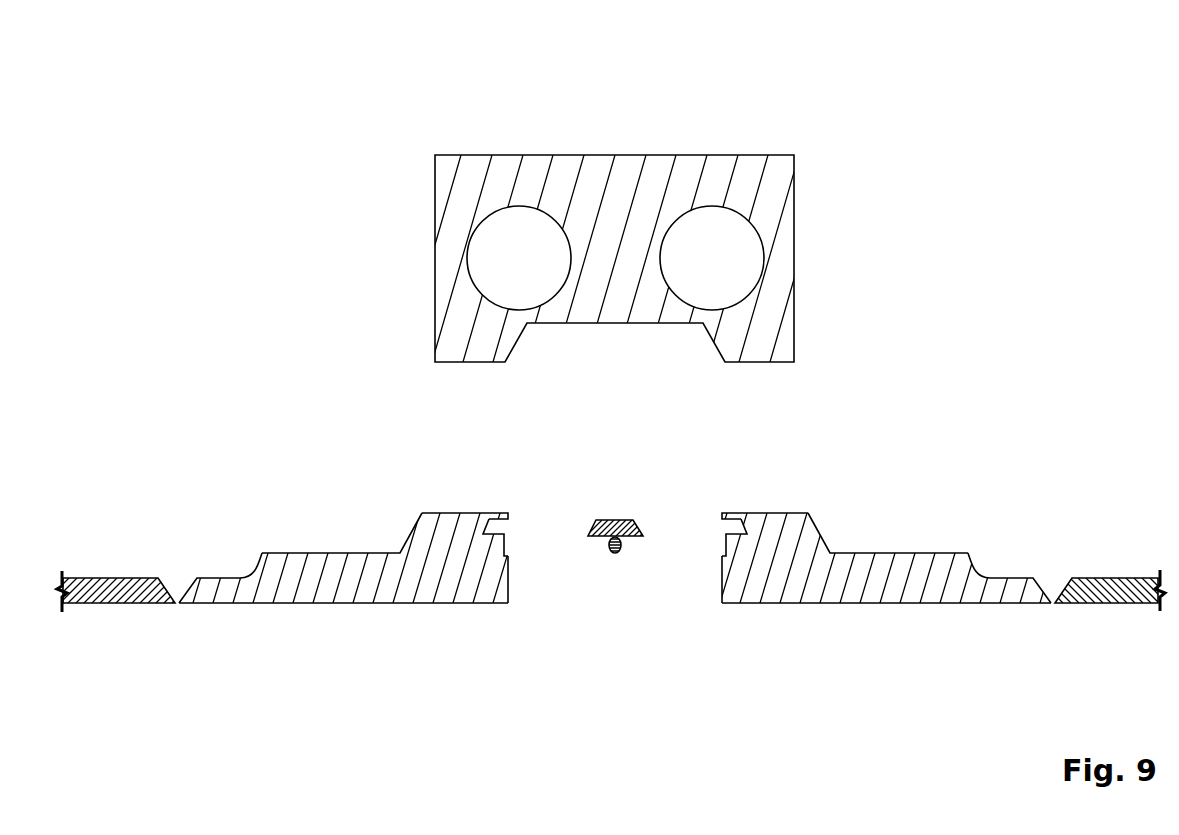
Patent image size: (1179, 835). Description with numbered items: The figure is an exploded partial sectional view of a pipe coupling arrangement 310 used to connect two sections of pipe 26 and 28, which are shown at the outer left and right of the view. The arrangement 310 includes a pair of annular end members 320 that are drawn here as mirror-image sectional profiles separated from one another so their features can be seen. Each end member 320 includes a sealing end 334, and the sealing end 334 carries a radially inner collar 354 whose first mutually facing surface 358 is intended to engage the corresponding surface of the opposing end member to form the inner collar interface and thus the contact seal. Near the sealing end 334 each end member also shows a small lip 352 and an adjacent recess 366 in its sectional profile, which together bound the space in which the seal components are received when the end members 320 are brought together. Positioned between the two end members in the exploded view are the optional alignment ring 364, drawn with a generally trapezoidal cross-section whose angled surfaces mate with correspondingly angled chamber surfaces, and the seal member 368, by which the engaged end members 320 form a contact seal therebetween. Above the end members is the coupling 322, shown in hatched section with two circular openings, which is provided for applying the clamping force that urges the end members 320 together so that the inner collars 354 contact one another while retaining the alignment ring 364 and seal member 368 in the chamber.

The pipe coupling arrangement 310 is at (1015, 55).
The coupling 322 is at (455, 202).
The section of pipe 26 is at (85, 597).
The section of pipe 28 is at (1098, 595).
The annular end member 320 is at (277, 597).
The sealing end 334 is at (313, 587).
The inner collar 354 is at (491, 580).
The lip 352 is at (508, 522).
The recess 366 is at (510, 550).
The first mutually facing surface 358 is at (513, 588).
The alignment ring 364 is at (617, 520).
The seal member 368 is at (610, 545).